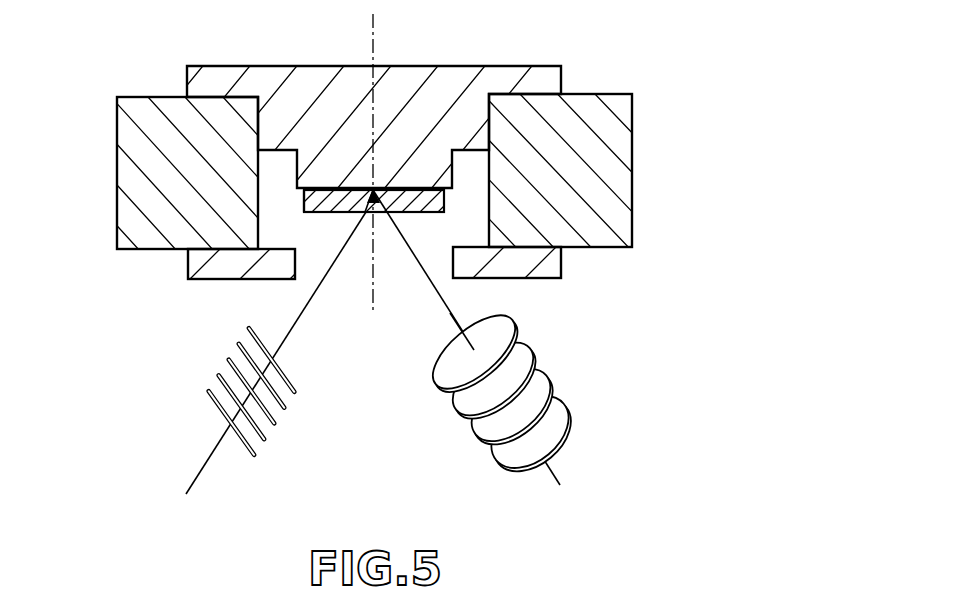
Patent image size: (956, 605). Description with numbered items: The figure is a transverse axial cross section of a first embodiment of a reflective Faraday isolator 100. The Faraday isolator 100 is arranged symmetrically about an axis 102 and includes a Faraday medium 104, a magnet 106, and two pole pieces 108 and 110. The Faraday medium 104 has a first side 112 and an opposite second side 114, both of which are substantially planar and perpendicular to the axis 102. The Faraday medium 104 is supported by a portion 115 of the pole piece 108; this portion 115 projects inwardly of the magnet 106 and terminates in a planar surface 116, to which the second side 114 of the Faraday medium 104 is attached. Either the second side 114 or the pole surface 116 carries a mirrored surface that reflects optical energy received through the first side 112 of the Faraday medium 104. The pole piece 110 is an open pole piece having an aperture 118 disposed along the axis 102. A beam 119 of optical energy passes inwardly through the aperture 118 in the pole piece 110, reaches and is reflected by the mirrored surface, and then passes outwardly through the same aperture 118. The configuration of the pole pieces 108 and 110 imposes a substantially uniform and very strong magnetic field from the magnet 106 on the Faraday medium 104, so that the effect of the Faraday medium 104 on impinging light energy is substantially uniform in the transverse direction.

The Faraday isolator 100 is at (580, 46).
The axis 102 is at (373, 44).
The Faraday medium 104 is at (405, 213).
The magnet 106 is at (117, 128).
The pole piece 108 is at (188, 70).
The pole piece 110 is at (202, 281).
The first side 112 is at (325, 212).
The second side 114 is at (314, 188).
The portion 115 is at (448, 77).
The planar surface 116 is at (412, 195).
The aperture 118 is at (446, 278).
The beam 119 is at (427, 277).